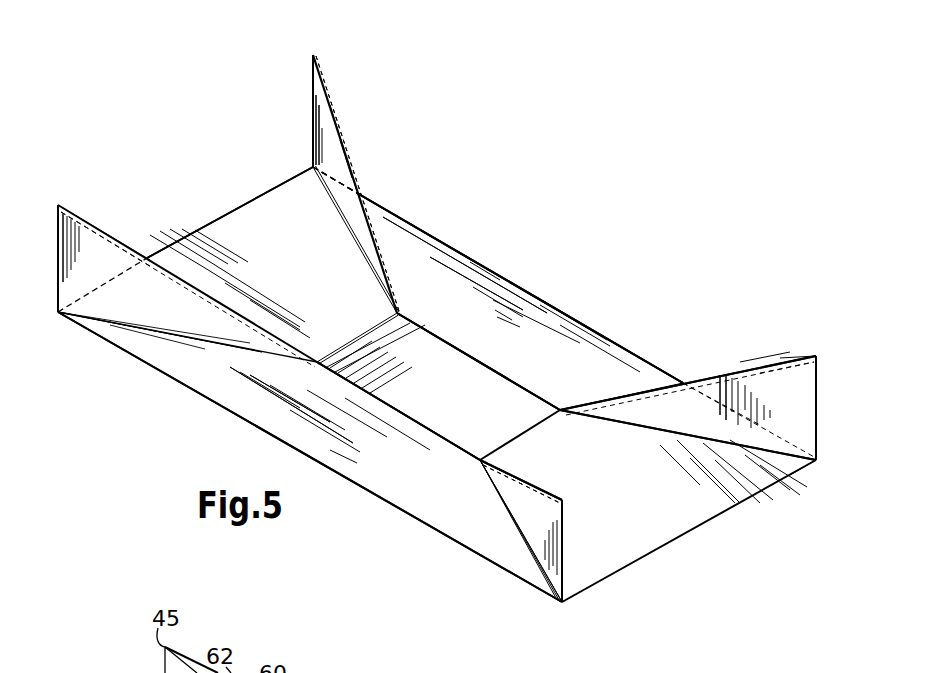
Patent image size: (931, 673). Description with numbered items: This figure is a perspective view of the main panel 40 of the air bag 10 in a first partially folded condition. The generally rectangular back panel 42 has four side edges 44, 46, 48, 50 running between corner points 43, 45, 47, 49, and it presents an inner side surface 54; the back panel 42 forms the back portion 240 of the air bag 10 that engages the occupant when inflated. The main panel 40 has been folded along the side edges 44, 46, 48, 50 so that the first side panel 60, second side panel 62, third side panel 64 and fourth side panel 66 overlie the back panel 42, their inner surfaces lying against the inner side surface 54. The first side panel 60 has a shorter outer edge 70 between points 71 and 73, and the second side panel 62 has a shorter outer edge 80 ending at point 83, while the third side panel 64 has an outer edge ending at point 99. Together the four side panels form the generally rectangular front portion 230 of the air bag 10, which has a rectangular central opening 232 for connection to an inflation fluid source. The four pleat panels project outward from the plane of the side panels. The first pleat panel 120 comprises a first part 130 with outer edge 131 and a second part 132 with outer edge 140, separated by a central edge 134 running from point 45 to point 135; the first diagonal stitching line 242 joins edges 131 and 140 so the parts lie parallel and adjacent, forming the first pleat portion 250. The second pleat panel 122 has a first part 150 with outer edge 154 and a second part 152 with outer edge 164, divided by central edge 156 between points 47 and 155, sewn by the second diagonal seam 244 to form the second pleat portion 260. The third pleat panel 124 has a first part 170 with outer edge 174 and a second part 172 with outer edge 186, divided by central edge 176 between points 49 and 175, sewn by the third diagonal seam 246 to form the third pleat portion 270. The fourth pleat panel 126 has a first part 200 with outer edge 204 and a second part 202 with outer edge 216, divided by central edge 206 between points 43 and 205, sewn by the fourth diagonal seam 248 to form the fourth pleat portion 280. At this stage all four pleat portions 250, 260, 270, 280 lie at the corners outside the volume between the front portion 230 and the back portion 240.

The air bag 10 is at (564, 186).
The main panel 40 is at (621, 296).
The back panel 42 is at (444, 416).
The point 43 is at (818, 462).
The first side edge 44 is at (448, 242).
The point 45 is at (312, 167).
The second side edge 46 is at (192, 232).
The point 47 is at (58, 312).
The third side edge 48 is at (293, 455).
The point 49 is at (565, 606).
The fourth side edge 50 is at (662, 548).
The inner side surface 54 is at (498, 416).
The first side panel 60 is at (506, 285).
The second side panel 62 is at (242, 214).
The third side panel 64 is at (250, 402).
The fourth side panel 66 is at (705, 523).
The outer edge 70 is at (500, 360).
The point 71 is at (560, 410).
The point 73 is at (398, 313).
The outer edge 80 is at (348, 345).
The point 83 is at (317, 362).
The point 99 is at (478, 461).
The first pleat panel 120 is at (302, 92).
The second pleat panel 122 is at (54, 224).
The third pleat panel 124 is at (577, 578).
The fourth pleat panel 126 is at (818, 373).
The first part 130 is at (354, 179).
The outer edge 131 is at (375, 243).
The second part 132 is at (327, 154).
The central edge 134 is at (313, 106).
The point 135 is at (313, 56).
The outer edge 140 is at (353, 164).
The first part 150 is at (213, 297).
The second part 152 is at (168, 316).
The outer edge 154 is at (243, 318).
The point 155 is at (60, 210).
The central edge 156 is at (58, 270).
The outer edge 164 is at (270, 340).
The first part 170 is at (533, 525).
The second part 172 is at (543, 484).
The outer edge 174 is at (497, 464).
The point 175 is at (563, 501).
The central edge 176 is at (562, 527).
The outer edge 186 is at (533, 486).
The first part 200 is at (787, 413).
The second part 202 is at (703, 378).
The outer edge 204 is at (757, 368).
The point 205 is at (814, 355).
The central edge 206 is at (818, 405).
The outer edge 216 is at (727, 373).
The front portion 230 is at (599, 322).
The central opening 232 is at (518, 410).
The back portion 240 is at (457, 437).
The first diagonal stitching line 242 is at (333, 133).
The second diagonal stitching line 244 is at (95, 233).
The third diagonal stitching line 246 is at (523, 485).
The fourth diagonal stitching line 248 is at (788, 360).
The first pleat portion 250 is at (348, 78).
The second pleat portion 260 is at (113, 222).
The third pleat portion 270 is at (577, 548).
The fourth pleat portion 280 is at (800, 349).